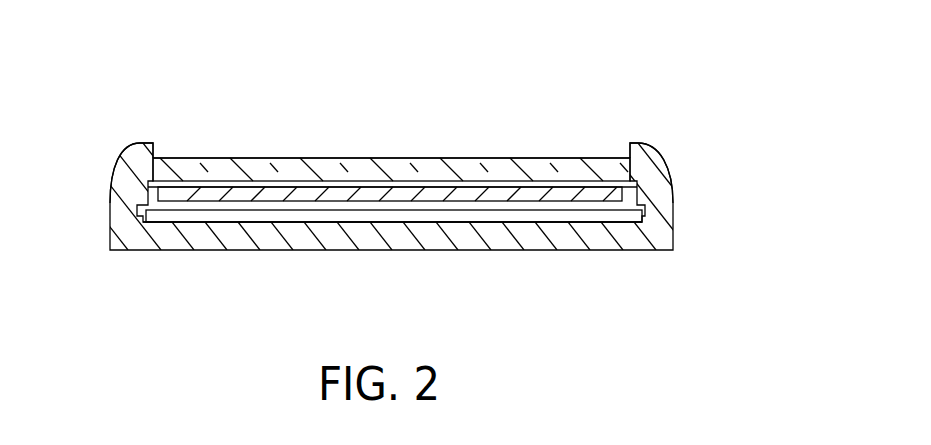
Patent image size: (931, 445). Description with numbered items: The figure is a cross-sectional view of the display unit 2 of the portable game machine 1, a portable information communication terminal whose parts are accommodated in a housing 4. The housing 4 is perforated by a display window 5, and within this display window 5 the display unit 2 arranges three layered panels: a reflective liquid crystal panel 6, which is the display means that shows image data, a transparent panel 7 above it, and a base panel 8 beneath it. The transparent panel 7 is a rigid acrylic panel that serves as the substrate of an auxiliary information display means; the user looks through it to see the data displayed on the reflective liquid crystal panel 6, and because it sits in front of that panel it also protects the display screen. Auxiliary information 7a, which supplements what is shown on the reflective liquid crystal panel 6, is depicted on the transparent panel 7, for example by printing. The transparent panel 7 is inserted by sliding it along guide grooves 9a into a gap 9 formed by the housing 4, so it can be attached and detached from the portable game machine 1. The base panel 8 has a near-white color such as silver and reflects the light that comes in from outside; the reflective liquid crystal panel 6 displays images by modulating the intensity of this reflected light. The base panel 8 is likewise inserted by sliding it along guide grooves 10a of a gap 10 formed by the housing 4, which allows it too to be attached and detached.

The portable game machine 1 is at (570, 80).
The display unit 2 is at (774, 139).
The housing 4 is at (667, 220).
The display window 5 is at (399, 139).
The reflective liquid crystal panel 6 is at (622, 197).
The transparent panel 7 is at (593, 158).
The auxiliary information 7a is at (157, 197).
The base panel 8 is at (557, 213).
The gap 9 is at (207, 158).
The guide grooves 9a is at (142, 158).
The gap 10 is at (255, 218).
The guide grooves 10a is at (143, 222).